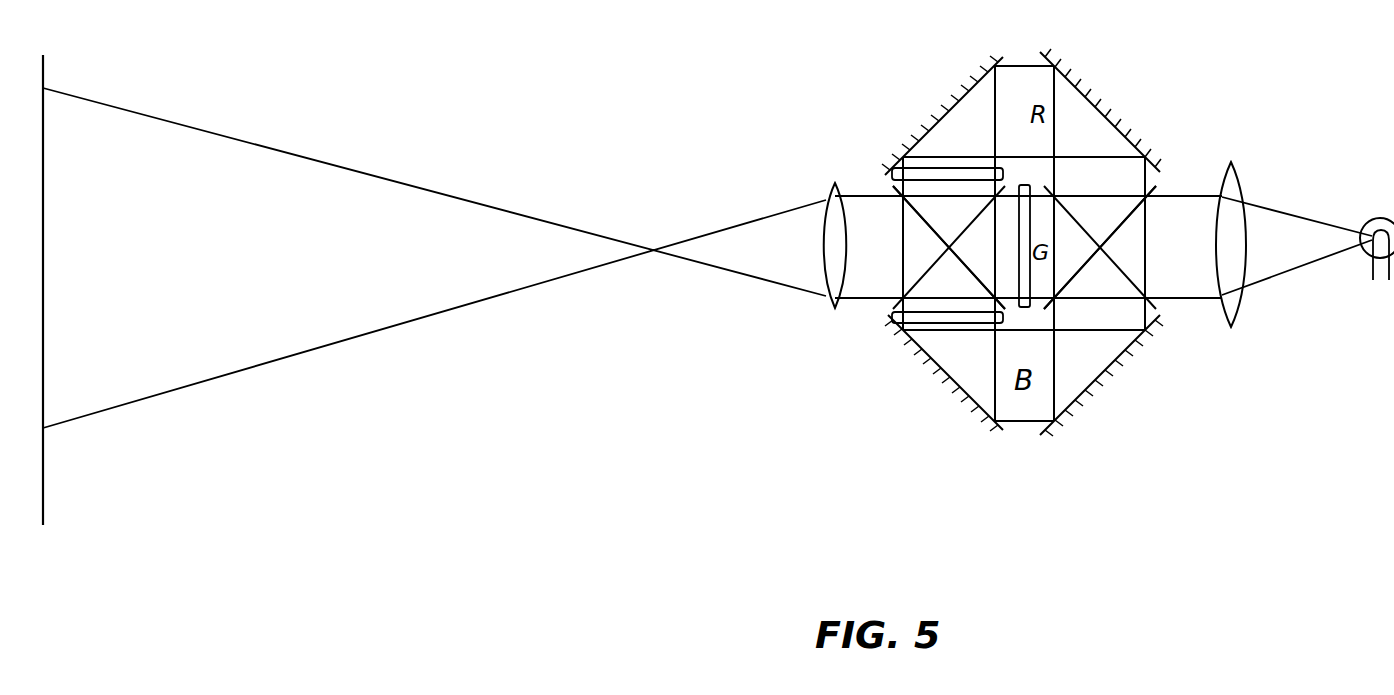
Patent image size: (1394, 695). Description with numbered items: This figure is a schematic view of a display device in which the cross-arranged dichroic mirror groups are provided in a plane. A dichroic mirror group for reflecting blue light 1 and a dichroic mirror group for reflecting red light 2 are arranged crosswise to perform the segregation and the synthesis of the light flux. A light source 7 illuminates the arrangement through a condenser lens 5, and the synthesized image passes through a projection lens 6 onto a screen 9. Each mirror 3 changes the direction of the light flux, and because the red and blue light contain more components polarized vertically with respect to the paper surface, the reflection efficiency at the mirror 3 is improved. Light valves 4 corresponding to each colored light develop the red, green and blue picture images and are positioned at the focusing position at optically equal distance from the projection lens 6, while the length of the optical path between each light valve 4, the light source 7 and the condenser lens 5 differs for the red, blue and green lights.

The dichroic mirror group for reflecting blue light 1 is at (925, 230).
The dichroic mirror group for reflecting red light 2 is at (918, 277).
The mirror 3 is at (947, 93).
The light valve 4 is at (914, 155).
The condenser lens 5 is at (1242, 184).
The projection lens 6 is at (832, 307).
The light source 7 is at (1384, 216).
The screen 9 is at (41, 512).